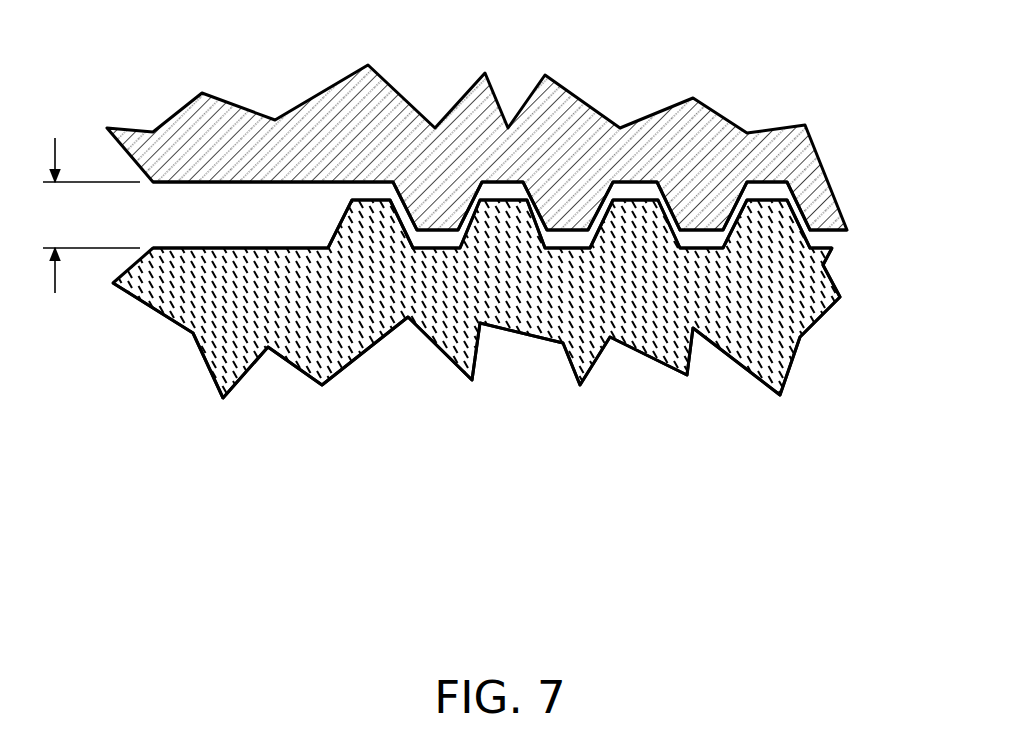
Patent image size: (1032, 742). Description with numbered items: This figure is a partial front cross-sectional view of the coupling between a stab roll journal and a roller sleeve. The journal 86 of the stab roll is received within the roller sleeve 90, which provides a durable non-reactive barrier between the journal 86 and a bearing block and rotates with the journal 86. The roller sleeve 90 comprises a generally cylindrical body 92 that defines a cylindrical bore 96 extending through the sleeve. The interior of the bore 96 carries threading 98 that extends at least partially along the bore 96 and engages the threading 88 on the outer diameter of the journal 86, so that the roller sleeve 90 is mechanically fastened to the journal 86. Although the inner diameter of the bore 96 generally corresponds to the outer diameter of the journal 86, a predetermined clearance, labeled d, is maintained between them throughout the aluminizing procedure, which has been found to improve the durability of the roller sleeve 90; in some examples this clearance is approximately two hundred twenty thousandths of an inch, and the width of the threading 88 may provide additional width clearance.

The journal 86 is at (663, 88).
The threading 88 is at (568, 217).
The roller sleeve 90 is at (422, 407).
The body 92 is at (563, 325).
The bore 96 is at (195, 218).
The threading 98 is at (785, 218).